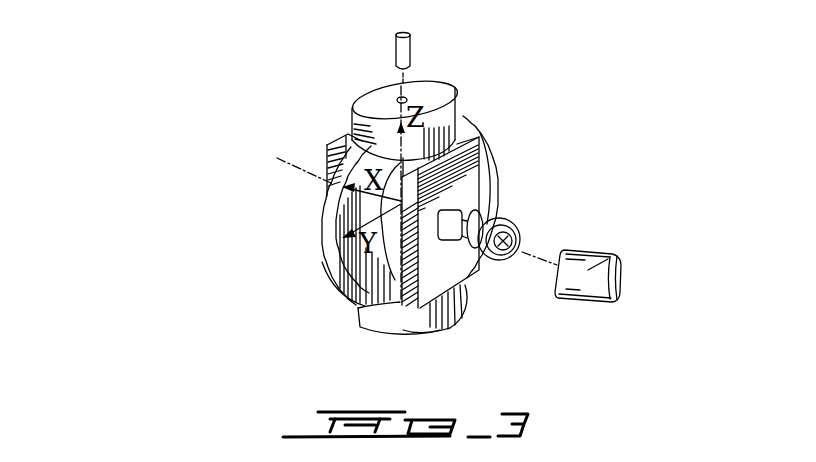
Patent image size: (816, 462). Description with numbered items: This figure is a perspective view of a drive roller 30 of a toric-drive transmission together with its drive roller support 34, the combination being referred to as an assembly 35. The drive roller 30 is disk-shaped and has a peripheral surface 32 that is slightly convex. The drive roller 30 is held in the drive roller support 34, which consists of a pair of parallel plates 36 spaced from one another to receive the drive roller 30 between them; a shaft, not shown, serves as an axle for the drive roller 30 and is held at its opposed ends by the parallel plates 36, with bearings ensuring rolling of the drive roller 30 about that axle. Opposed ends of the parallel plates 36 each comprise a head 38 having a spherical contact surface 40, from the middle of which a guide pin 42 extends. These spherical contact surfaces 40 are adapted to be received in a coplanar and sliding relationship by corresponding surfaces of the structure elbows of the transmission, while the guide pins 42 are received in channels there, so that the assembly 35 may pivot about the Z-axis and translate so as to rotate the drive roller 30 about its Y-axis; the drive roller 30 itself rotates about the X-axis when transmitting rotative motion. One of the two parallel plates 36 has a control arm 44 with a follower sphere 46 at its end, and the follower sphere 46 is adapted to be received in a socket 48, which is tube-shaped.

The drive roller 30 is at (340, 295).
The peripheral surface 32 is at (323, 242).
The drive roller support 34 is at (486, 165).
The assembly 35 is at (218, 220).
The parallel plates 36 is at (327, 160).
The head 38 is at (462, 111).
The spherical contact surface 40 is at (367, 100).
The guide pin 42 is at (396, 50).
The control arm 44 is at (490, 198).
The follower sphere 46 is at (508, 233).
The socket 48 is at (622, 262).